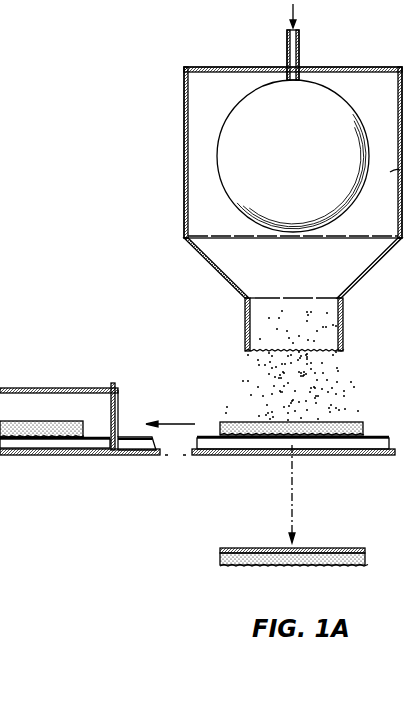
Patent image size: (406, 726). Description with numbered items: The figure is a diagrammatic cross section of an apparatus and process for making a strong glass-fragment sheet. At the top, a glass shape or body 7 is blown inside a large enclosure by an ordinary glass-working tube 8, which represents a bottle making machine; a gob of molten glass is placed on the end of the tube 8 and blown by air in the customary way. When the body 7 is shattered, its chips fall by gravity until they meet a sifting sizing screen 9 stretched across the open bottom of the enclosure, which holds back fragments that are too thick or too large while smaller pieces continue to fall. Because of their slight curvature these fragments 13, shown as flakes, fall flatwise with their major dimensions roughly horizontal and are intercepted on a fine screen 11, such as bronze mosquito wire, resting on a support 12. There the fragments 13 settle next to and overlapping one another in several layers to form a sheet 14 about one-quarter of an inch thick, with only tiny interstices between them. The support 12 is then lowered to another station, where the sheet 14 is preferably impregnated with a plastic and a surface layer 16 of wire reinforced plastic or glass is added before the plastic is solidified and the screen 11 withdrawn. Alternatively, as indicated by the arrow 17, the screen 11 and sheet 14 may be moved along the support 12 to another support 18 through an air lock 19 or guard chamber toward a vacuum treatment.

The glass shape or body 7 is at (349, 108).
The glass-working tube 8 is at (287, 42).
The sifting sizing screen 9 is at (343, 350).
The fine screen 11 is at (354, 446).
The support 12 is at (341, 452).
The fragments 13 is at (320, 398).
The sheet 14 is at (360, 422).
The surface layer 16 is at (342, 548).
The arrow 17 is at (188, 412).
The support 18 is at (36, 449).
The air lock 19 is at (24, 395).